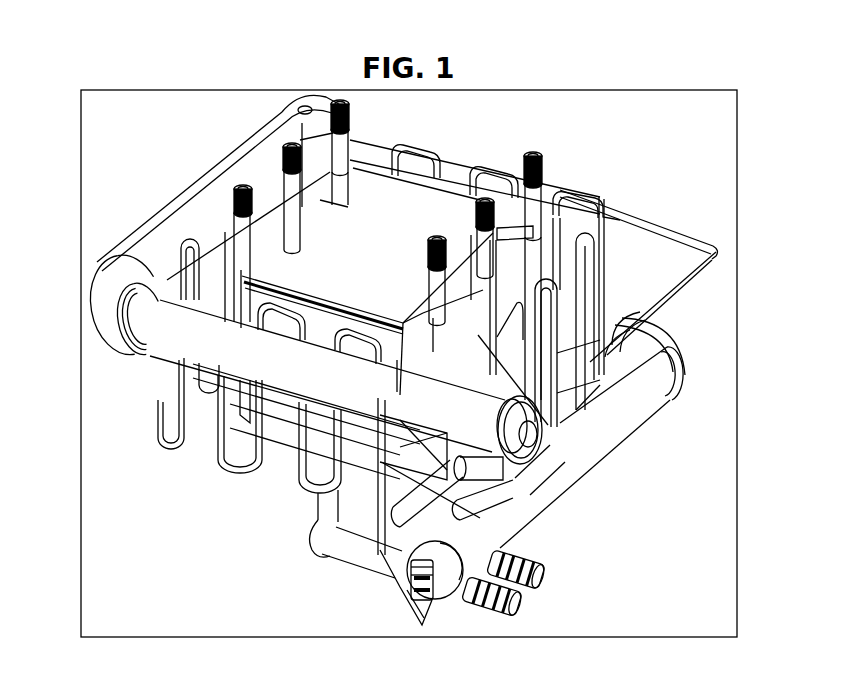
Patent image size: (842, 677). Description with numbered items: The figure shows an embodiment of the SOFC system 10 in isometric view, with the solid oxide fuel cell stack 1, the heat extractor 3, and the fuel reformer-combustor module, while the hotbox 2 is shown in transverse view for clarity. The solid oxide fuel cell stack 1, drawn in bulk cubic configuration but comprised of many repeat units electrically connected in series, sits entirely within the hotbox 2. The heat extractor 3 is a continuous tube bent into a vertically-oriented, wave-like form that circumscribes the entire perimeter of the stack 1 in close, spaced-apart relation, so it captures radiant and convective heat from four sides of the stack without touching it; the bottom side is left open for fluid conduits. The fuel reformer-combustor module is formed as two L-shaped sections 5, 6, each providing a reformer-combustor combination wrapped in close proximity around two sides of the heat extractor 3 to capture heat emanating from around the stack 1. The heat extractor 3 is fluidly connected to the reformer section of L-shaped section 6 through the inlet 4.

The SOFC system 10 is at (552, 67).
The solid oxide fuel cell stack 1 is at (410, 204).
The hotbox 2 is at (80, 252).
The heat extractor 3 is at (603, 265).
The inlet 4 is at (412, 593).
The L-shaped section of fuel reformer-combustor module 5 is at (203, 343).
The L-shaped section of fuel reformer-combustor module 6 is at (603, 432).